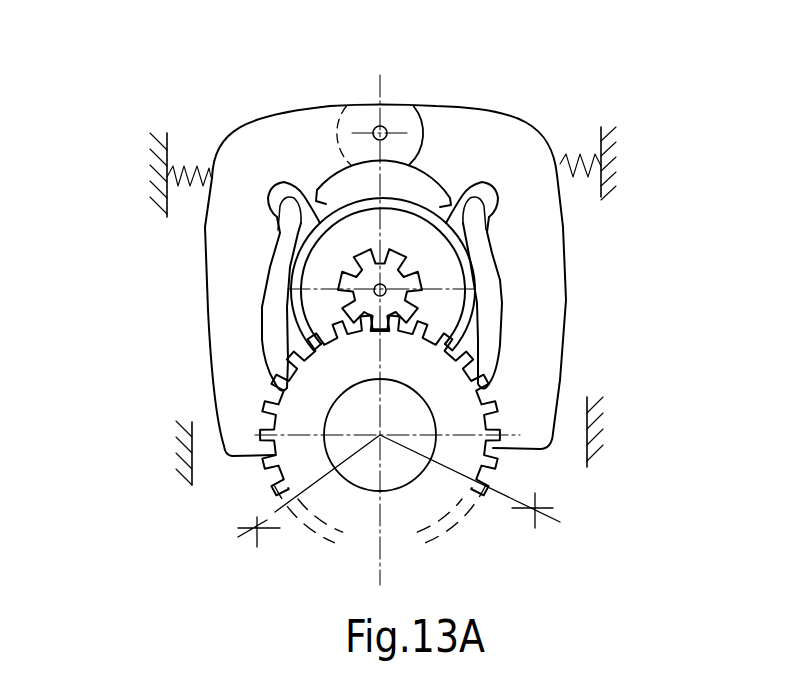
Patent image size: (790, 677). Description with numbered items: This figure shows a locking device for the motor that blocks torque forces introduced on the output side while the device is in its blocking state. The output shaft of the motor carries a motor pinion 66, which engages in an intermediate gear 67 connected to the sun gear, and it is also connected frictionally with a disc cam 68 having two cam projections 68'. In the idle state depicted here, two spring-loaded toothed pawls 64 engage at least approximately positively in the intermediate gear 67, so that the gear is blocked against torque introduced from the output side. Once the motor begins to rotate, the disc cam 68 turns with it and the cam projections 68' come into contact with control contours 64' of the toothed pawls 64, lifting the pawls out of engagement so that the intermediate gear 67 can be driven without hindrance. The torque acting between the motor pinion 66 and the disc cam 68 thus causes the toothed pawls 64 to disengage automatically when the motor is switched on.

The toothed pawl 64 is at (400, 281).
The control contour 64' is at (344, 190).
The motor pinion 66 is at (395, 276).
The intermediate gear 67 is at (458, 404).
The disc cam 68 is at (464, 304).
The cam projection 68' is at (373, 213).